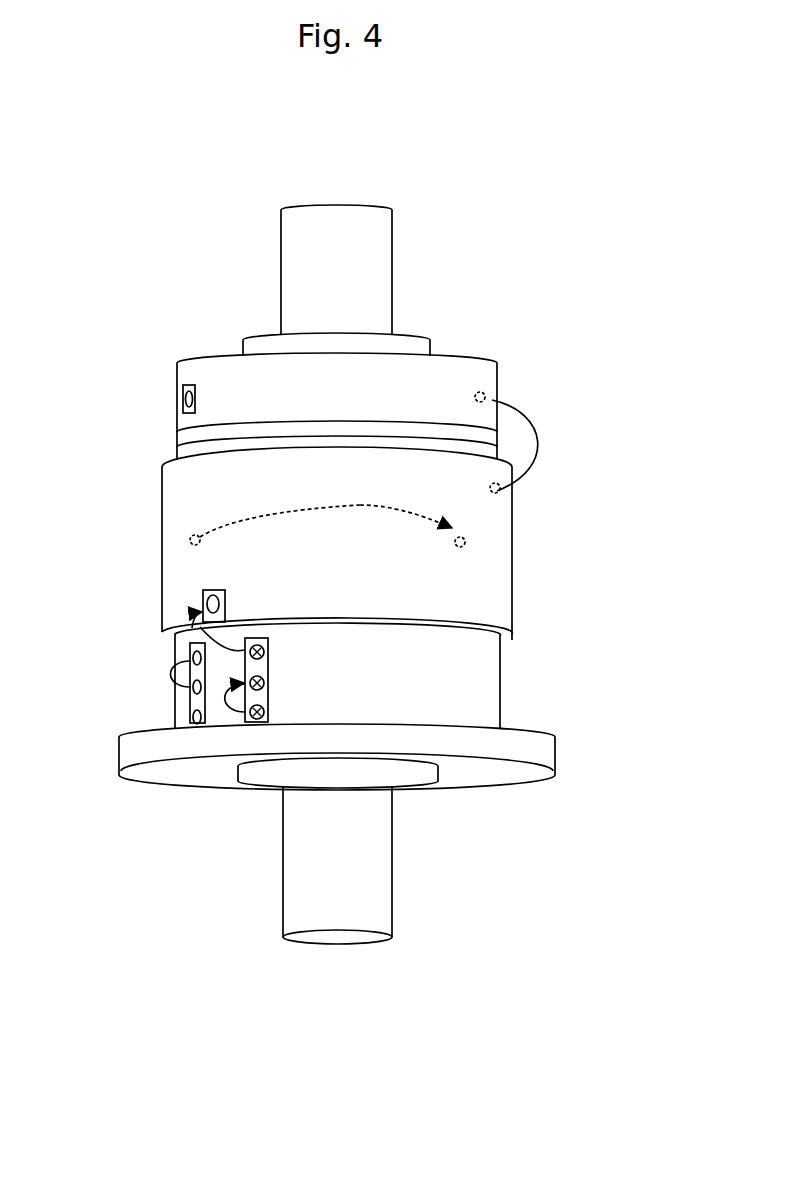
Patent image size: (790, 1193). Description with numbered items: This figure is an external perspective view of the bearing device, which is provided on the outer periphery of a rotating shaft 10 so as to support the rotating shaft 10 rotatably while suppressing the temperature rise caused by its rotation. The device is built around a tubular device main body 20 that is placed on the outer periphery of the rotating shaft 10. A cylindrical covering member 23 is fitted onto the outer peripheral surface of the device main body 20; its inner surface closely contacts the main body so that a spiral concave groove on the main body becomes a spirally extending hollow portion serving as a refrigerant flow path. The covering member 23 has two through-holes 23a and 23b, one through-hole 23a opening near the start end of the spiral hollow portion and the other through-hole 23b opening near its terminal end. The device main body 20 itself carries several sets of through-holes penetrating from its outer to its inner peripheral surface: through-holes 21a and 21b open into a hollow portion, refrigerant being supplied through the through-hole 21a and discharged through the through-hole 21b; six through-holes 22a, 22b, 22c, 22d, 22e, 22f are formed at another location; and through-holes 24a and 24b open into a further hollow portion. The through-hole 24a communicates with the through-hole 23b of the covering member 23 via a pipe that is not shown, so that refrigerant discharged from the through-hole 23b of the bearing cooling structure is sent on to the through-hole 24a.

The rotating shaft 10 is at (398, 263).
The device main body 20 is at (516, 605).
The through-hole 21a is at (190, 540).
The through-hole 21b is at (464, 548).
The through-hole 22a is at (189, 717).
The through-hole 22b is at (190, 690).
The through-hole 22c is at (189, 657).
The through-hole 22d is at (268, 712).
The through-hole 22e is at (268, 683).
The through-hole 22f is at (268, 652).
The covering member 23 is at (178, 498).
The through-hole 23a is at (208, 602).
The through-hole 23b is at (500, 494).
The through-hole 24a is at (490, 398).
The through-hole 24b is at (183, 401).